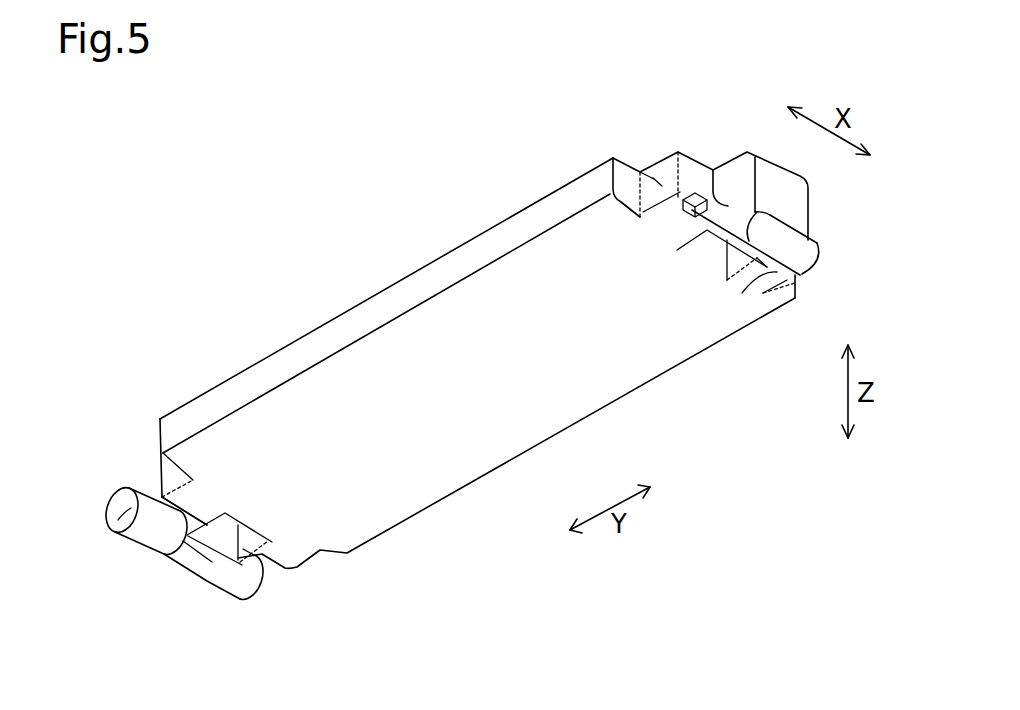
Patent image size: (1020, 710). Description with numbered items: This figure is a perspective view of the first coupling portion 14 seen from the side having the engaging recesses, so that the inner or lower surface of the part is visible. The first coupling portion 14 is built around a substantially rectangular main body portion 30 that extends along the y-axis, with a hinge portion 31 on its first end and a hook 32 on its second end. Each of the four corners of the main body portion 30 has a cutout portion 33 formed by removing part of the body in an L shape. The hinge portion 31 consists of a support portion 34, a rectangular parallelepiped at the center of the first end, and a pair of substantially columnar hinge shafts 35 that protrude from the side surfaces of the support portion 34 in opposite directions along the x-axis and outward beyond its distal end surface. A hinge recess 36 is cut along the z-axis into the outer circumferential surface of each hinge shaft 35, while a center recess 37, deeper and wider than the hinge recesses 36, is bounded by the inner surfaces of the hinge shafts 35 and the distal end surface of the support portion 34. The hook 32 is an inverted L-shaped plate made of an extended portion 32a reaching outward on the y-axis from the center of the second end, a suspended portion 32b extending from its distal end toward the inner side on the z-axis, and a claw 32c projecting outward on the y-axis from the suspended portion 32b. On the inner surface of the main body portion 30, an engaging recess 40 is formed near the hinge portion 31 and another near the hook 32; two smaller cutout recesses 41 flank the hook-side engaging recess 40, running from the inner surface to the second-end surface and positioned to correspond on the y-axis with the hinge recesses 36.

The first coupling portion 14 is at (252, 232).
The main body portion 30 is at (428, 268).
The hinge portion 31 is at (127, 468).
The hook 32 is at (810, 195).
The extended portion 32a is at (724, 162).
The suspended portion 32b is at (810, 221).
The claw 32c is at (812, 258).
The cutout portion 33 is at (655, 176).
The support portion 34 is at (185, 566).
The hinge shaft 35 is at (104, 508).
The hinge recess 36 is at (130, 541).
The center recess 37 is at (168, 560).
The engaging recess 40 is at (718, 250).
The cutout recess 41 is at (690, 235).